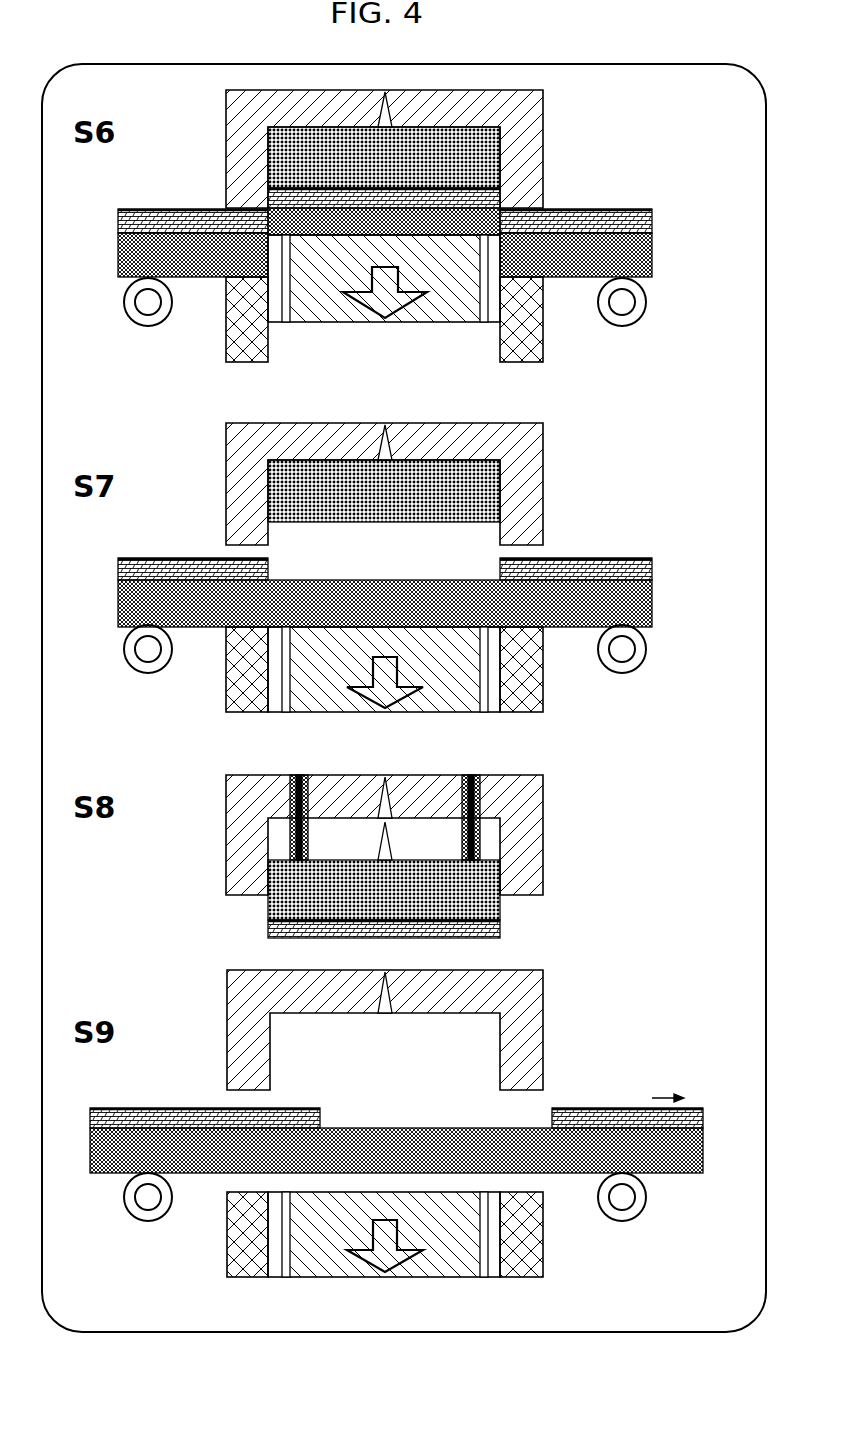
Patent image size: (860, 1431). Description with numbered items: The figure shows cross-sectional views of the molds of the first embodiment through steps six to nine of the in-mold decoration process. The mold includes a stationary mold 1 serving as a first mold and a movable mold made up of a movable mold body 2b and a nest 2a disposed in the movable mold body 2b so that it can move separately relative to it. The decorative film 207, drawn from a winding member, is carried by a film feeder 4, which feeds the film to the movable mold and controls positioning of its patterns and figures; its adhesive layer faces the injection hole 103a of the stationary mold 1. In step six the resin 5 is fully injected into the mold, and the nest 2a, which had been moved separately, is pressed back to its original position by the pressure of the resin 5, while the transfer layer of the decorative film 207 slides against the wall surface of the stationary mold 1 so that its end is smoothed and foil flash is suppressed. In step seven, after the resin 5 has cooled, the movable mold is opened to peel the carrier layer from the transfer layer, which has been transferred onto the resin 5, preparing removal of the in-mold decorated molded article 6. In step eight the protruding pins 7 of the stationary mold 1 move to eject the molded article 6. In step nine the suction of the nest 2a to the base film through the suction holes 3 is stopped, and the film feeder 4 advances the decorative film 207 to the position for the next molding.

The stationary mold 1 is at (538, 104).
The nest 2a is at (325, 322).
The movable mold body 2b is at (252, 353).
The suction holes 3 is at (282, 323).
The film feeder 4 is at (148, 327).
The resin 5 is at (290, 158).
The in-mold decorated molded article 6 is at (505, 858).
The protruding pins 7 is at (482, 786).
The injection hole 103a is at (383, 793).
The decorative film 207 is at (622, 209).